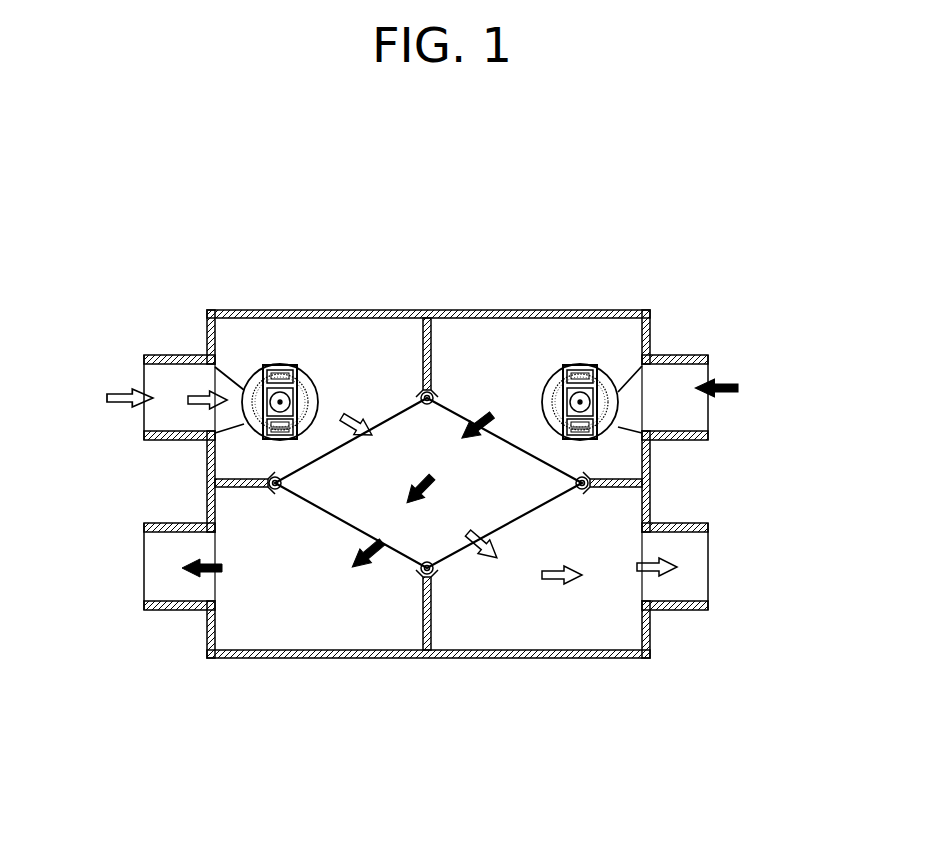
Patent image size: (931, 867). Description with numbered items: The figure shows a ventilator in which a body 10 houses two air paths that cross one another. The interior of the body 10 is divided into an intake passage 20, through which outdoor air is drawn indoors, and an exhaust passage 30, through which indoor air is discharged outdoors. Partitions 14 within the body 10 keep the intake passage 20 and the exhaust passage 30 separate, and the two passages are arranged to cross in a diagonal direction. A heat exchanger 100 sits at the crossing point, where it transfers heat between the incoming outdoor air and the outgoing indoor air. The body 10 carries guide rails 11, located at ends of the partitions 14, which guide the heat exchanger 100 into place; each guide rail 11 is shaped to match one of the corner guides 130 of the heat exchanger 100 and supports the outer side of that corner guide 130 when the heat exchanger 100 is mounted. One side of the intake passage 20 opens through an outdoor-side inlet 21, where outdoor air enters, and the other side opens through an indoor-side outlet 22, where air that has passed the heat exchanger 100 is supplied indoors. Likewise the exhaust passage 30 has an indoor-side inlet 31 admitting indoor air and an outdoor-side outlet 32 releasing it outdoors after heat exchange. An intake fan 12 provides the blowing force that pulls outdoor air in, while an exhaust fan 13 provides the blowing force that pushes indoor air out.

The body 10 is at (640, 302).
The guide rails 11 is at (592, 478).
The intake fan 12 is at (276, 364).
The exhaust fan 13 is at (579, 364).
The partitions 14 is at (437, 318).
The intake passage 20 is at (372, 371).
The outdoor-side inlet 21 is at (146, 367).
The indoor-side outlet 22 is at (708, 598).
The exhaust passage 30 is at (505, 371).
The indoor-side inlet 31 is at (702, 368).
The outdoor-side outlet 32 is at (148, 598).
The heat exchanger 100 is at (453, 558).
The corner guides 130 is at (594, 487).